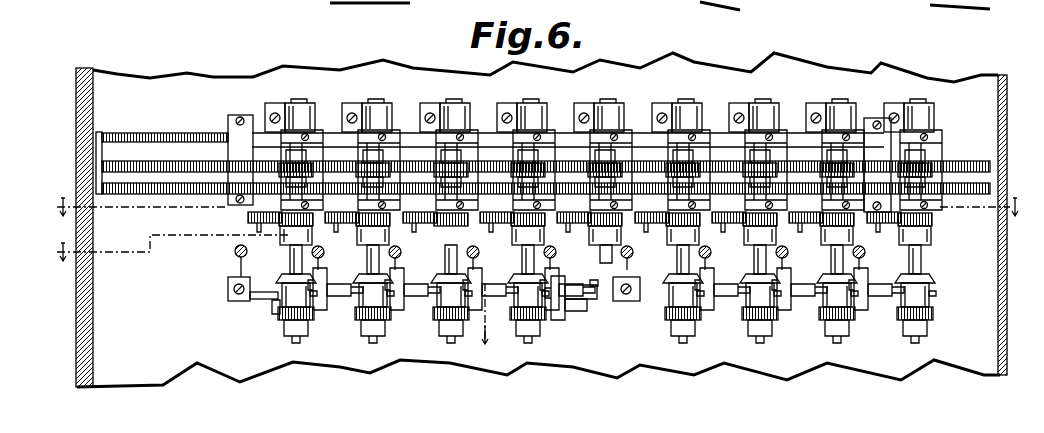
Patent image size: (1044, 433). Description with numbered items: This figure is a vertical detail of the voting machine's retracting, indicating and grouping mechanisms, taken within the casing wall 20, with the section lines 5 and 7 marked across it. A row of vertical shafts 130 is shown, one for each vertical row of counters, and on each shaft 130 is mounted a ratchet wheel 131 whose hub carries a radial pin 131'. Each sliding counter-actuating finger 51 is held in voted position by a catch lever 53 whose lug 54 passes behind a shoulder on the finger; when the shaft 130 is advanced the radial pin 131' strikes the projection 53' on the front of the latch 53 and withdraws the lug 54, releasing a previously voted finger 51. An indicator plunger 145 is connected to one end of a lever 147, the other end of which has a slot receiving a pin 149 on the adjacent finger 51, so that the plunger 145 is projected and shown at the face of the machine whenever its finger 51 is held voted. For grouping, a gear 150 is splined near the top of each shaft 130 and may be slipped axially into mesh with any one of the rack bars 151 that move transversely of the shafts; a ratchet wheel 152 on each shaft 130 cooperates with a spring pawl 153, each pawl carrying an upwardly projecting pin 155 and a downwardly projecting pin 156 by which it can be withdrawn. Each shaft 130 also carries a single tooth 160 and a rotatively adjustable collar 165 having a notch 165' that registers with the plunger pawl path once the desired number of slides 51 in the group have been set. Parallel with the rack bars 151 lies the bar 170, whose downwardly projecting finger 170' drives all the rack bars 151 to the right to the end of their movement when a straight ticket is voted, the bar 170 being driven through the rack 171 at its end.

The casing wall 20 is at (77, 101).
The section line 5 is at (535, 208).
The section line 7 is at (271, 290).
The sliding counter-actuating finger 51 is at (341, 312).
The catch lever 53 is at (696, 326).
The projection of the latch 53' is at (588, 274).
The lug 54 is at (272, 313).
The shaft 130 is at (835, 100).
The ratchet wheel 131 is at (628, 354).
The radial pin 131' is at (953, 295).
The plunger 145 is at (236, 251).
The lever 147 is at (247, 261).
The pin 149 is at (248, 308).
The gear 150 is at (262, 197).
The rack bars 151 is at (147, 170).
The ratchet wheel 152 is at (286, 228).
The spring pawl 153 is at (516, 222).
The pin 155 is at (372, 186).
The pin 156 is at (645, 233).
The single tooth 160 is at (388, 233).
The rotatively adjustable collar 165 is at (929, 271).
The notch 165' is at (217, 305).
The bar 170 is at (550, 112).
The finger 170' is at (117, 146).
The rack 171 is at (173, 134).